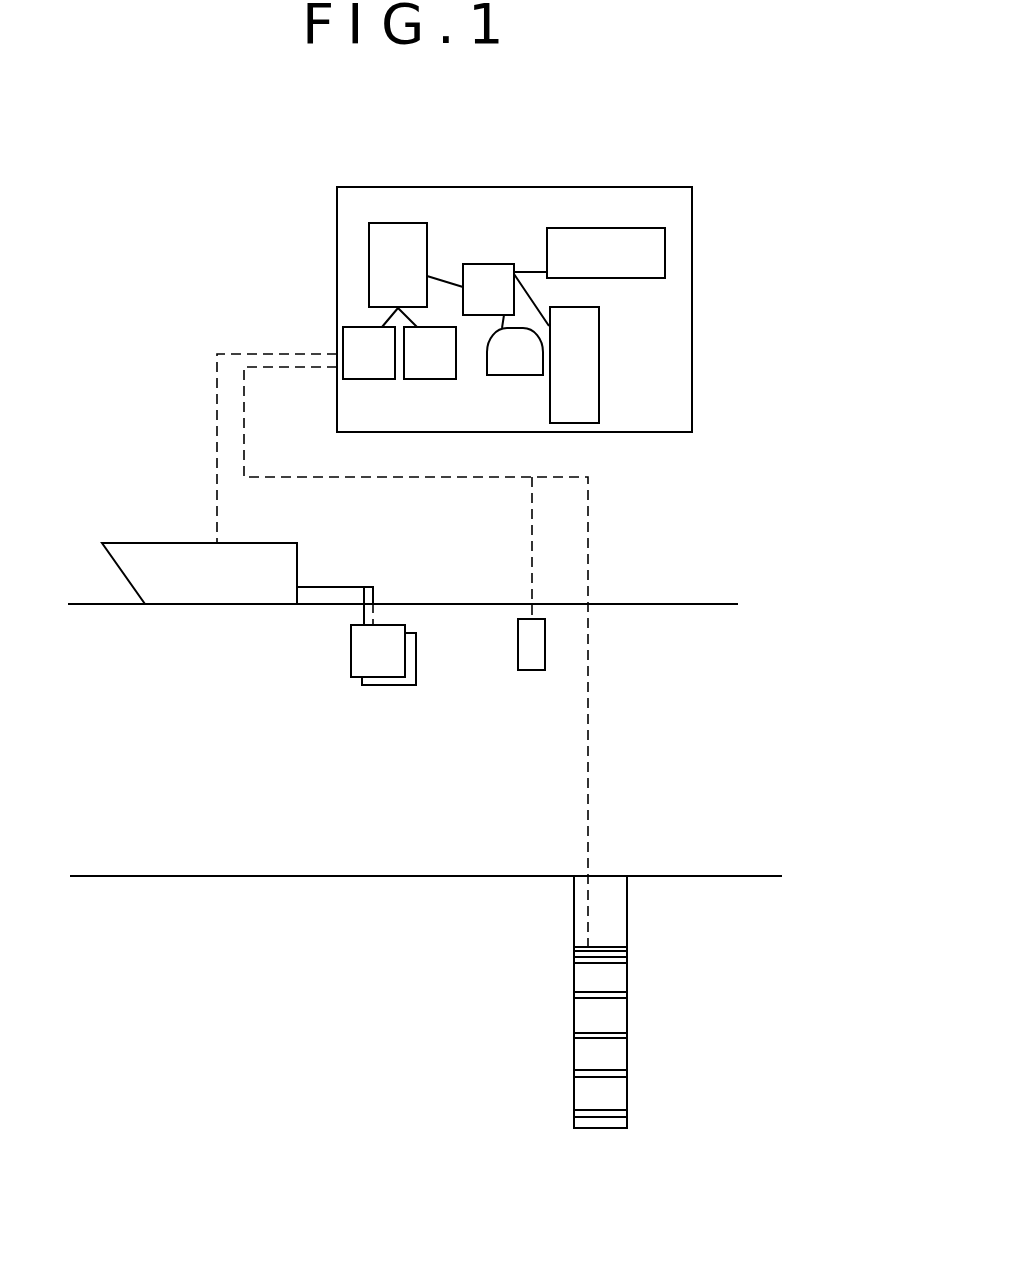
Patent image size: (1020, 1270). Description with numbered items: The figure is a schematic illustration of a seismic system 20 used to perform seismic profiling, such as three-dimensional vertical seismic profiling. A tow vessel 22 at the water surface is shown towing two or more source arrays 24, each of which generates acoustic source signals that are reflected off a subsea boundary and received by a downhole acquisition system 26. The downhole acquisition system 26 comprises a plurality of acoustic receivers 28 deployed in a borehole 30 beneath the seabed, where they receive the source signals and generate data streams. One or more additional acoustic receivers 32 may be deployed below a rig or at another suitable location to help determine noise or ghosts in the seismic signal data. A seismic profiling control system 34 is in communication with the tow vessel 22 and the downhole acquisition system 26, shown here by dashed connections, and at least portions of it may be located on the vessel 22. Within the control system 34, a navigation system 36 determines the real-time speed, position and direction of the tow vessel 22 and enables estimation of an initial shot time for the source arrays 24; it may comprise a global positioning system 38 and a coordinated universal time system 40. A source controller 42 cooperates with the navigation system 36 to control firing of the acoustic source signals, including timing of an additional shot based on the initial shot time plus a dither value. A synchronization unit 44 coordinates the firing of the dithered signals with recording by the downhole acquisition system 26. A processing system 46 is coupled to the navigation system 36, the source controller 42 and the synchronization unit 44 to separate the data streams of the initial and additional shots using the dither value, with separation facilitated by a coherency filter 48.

The seismic system 20 is at (762, 213).
The tow vessel 22 is at (143, 542).
The source arrays 24 is at (351, 653).
The downhole acquisition system 26 is at (612, 942).
The acoustic receivers 28 is at (620, 994).
The borehole 30 is at (607, 903).
The additional acoustic receivers 32 is at (518, 647).
The seismic profiling control system 34 is at (506, 187).
The navigation system 36 is at (393, 223).
The global positioning system 38 is at (373, 379).
The coordinated universal time system 40 is at (435, 380).
The source controller 42 is at (577, 227).
The synchronization unit 44 is at (600, 360).
The processing system 46 is at (490, 263).
The coherency filter 48 is at (510, 375).